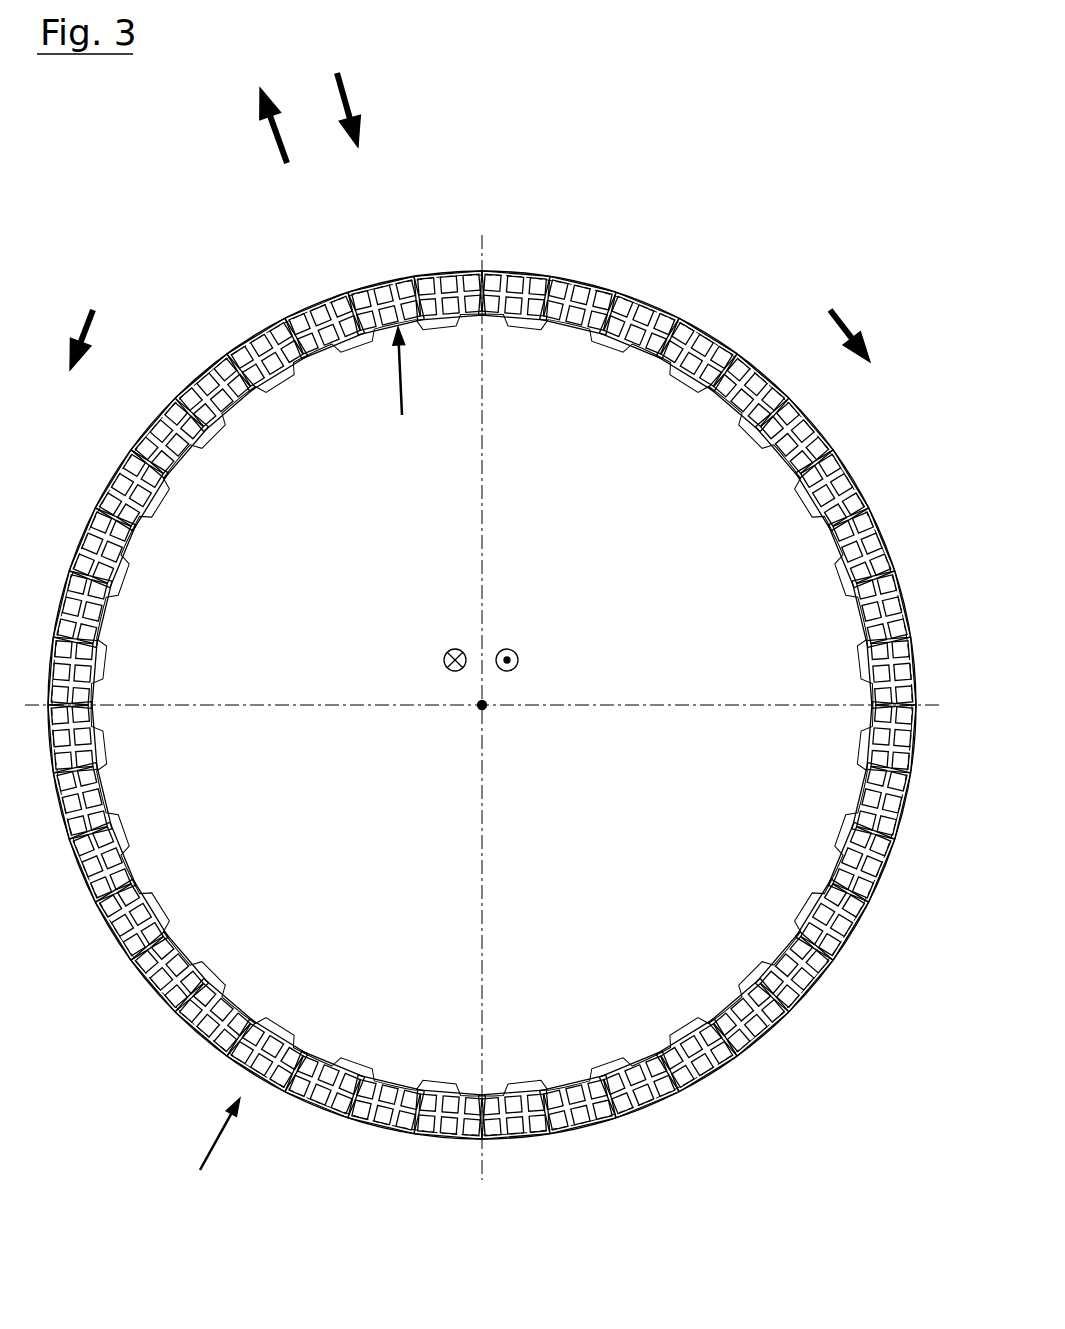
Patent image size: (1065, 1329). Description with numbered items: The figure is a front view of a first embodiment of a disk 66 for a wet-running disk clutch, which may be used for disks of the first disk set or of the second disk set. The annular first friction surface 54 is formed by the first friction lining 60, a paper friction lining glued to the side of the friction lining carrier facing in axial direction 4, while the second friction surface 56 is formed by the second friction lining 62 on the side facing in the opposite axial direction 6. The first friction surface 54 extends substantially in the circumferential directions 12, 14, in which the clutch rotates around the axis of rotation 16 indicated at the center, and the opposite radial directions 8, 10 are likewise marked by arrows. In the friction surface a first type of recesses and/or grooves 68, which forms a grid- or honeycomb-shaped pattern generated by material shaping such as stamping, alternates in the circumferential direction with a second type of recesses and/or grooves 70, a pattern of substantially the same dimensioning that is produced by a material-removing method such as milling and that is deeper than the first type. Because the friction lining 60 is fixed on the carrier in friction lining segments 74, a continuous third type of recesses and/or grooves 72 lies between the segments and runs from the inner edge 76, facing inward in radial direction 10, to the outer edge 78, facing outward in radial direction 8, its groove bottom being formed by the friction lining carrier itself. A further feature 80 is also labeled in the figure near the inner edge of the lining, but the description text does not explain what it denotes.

The axial direction 4 is at (518, 655).
The axial direction 6 is at (442, 655).
The radial direction 8 is at (272, 137).
The radial direction 10 is at (345, 90).
The circumferential direction 12 is at (861, 321).
The circumferential direction 14 is at (85, 325).
The axis of rotation 16 is at (482, 705).
The first friction surface 54 is at (212, 388).
The second friction surface 56 is at (482, 705).
The first friction lining 60 is at (706, 340).
The second friction lining 62 is at (482, 705).
The disk 66 is at (295, 765).
The first type of recesses and/or grooves 68 is at (458, 293).
The second type of recesses and/or grooves 70 is at (523, 283).
The third type of recesses and/or grooves 72 is at (417, 288).
The friction lining segments 74 is at (443, 259).
The inner edge 76 is at (630, 352).
The outer edge 78 is at (520, 268).
The tab 80 is at (295, 337).